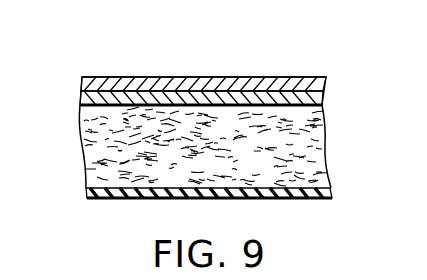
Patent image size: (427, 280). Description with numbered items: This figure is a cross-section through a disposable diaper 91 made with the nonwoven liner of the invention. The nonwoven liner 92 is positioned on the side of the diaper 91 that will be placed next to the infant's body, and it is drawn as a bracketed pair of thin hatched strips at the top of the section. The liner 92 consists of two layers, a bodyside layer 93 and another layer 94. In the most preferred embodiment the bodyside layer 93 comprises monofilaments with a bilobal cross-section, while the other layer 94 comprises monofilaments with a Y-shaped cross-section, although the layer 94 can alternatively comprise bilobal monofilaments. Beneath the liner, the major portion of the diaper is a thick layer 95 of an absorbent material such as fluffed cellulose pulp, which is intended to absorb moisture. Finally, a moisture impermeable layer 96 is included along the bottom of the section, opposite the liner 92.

The disposable diaper 91 is at (246, 77).
The nonwoven liner 92 is at (73, 77).
The bodyside layer 93 is at (287, 85).
The other layer 94 is at (168, 100).
The layer of absorbent material 95 is at (324, 148).
The moisture impermeable layer 96 is at (275, 196).